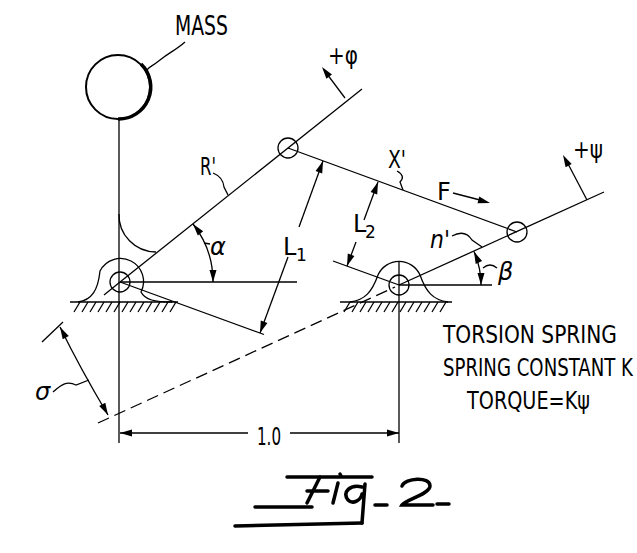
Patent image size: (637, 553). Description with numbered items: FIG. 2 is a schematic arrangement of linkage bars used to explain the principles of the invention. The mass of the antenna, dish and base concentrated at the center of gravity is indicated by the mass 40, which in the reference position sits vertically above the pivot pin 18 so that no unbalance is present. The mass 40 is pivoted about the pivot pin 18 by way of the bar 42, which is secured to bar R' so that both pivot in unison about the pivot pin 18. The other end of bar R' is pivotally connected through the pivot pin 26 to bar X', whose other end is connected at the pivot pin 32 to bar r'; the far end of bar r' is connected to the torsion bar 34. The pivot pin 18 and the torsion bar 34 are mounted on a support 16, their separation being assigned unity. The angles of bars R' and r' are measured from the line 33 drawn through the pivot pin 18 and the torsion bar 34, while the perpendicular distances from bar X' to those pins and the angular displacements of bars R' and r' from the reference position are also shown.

The mass 40 is at (86, 90).
The bar 42 is at (118, 162).
The pivot pin 18 is at (104, 264).
The pivot pin 26 is at (286, 138).
The pivot pin 32 is at (527, 233).
The line 33 is at (255, 284).
The torsion bar 34 is at (371, 283).
The support 16 is at (102, 306).